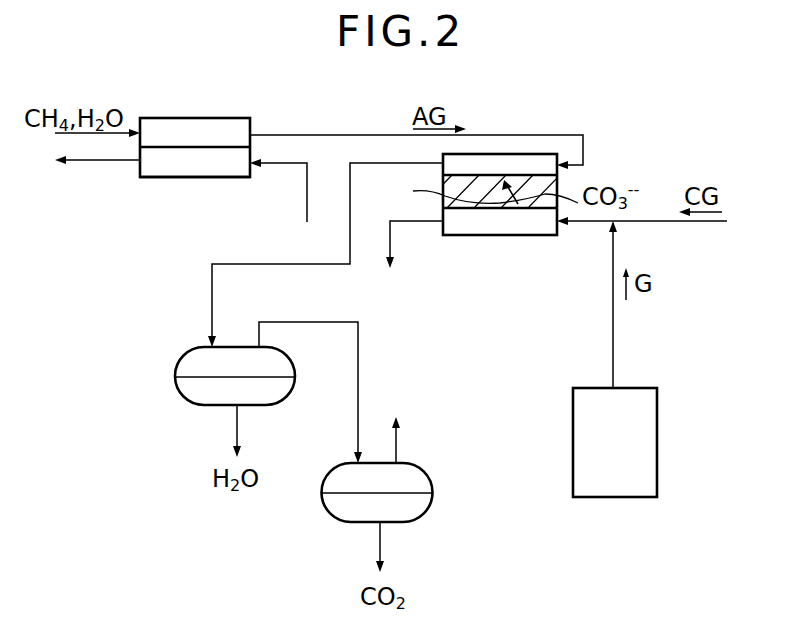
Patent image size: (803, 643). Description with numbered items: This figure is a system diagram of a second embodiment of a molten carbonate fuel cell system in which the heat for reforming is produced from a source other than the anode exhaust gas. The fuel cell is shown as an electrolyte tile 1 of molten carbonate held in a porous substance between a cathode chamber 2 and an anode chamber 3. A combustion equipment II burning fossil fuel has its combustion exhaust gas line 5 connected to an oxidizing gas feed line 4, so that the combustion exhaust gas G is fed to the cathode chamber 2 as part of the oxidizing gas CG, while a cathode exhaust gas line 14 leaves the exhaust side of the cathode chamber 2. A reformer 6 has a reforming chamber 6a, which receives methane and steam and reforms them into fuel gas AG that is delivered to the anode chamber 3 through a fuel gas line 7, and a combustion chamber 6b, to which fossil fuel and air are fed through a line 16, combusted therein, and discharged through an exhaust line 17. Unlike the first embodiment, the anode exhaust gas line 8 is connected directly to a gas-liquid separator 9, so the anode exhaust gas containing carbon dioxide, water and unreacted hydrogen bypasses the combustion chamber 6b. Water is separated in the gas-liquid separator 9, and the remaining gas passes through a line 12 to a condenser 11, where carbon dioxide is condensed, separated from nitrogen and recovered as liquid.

The electrolyte tile 1 is at (526, 187).
The cathode chamber 2 is at (521, 235).
The anode chamber 3 is at (520, 154).
The oxidizing gas feed line 4 is at (700, 222).
The combustion exhaust gas line 5 is at (613, 347).
The reformer 6 is at (231, 118).
The reforming chamber 6a is at (172, 133).
The combustion chamber 6b is at (172, 175).
The fuel gas line 7 is at (349, 135).
The anode exhaust gas line 8 is at (261, 264).
The gas-liquid separator 9 is at (187, 357).
The condenser 11 is at (424, 468).
The line 12 is at (358, 340).
The cathode exhaust gas line 14 is at (393, 238).
The line 16 is at (307, 194).
The exhaust line 17 is at (97, 184).
The combustion equipment II is at (672, 435).